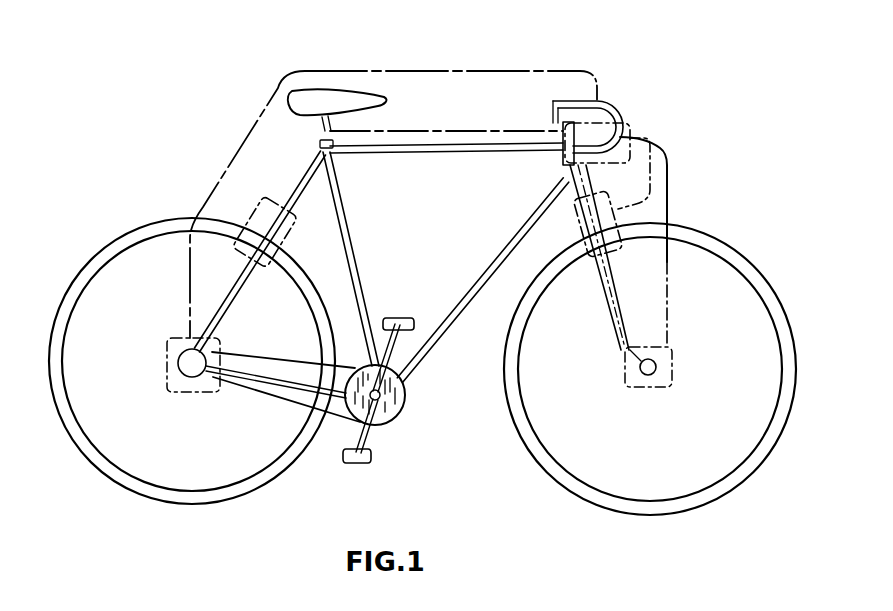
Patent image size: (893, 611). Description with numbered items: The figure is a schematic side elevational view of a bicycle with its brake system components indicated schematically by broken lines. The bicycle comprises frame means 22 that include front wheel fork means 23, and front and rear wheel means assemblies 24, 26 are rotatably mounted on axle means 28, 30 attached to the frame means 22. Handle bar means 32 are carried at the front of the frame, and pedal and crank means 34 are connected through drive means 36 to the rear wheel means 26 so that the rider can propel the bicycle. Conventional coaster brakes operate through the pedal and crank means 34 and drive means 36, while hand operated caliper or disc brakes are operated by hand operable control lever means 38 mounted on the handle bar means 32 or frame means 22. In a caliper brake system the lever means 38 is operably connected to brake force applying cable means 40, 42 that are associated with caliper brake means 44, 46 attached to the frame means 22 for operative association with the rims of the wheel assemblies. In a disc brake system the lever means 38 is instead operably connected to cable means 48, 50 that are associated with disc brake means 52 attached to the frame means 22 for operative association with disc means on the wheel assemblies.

The frame means 22 is at (577, 192).
The front wheel fork means 23 is at (598, 288).
The front wheel means assembly 24 is at (737, 250).
The rear wheel means assembly 26 is at (145, 222).
The axle means 28 is at (658, 372).
The axle means 30 is at (177, 367).
The handle bar means 32 is at (612, 107).
The pedal and crank means 34 is at (392, 396).
The drive means 36 is at (263, 403).
The hand operable control lever means 38 is at (632, 120).
The brake force applying cable means 40 is at (655, 138).
The brake force applying cable means 42 is at (431, 132).
The caliper brake means 44 is at (570, 218).
The caliper brake means 46 is at (300, 219).
The cable means 48 is at (668, 190).
The cable means 50 is at (463, 71).
The disc brake means 52 is at (168, 337).